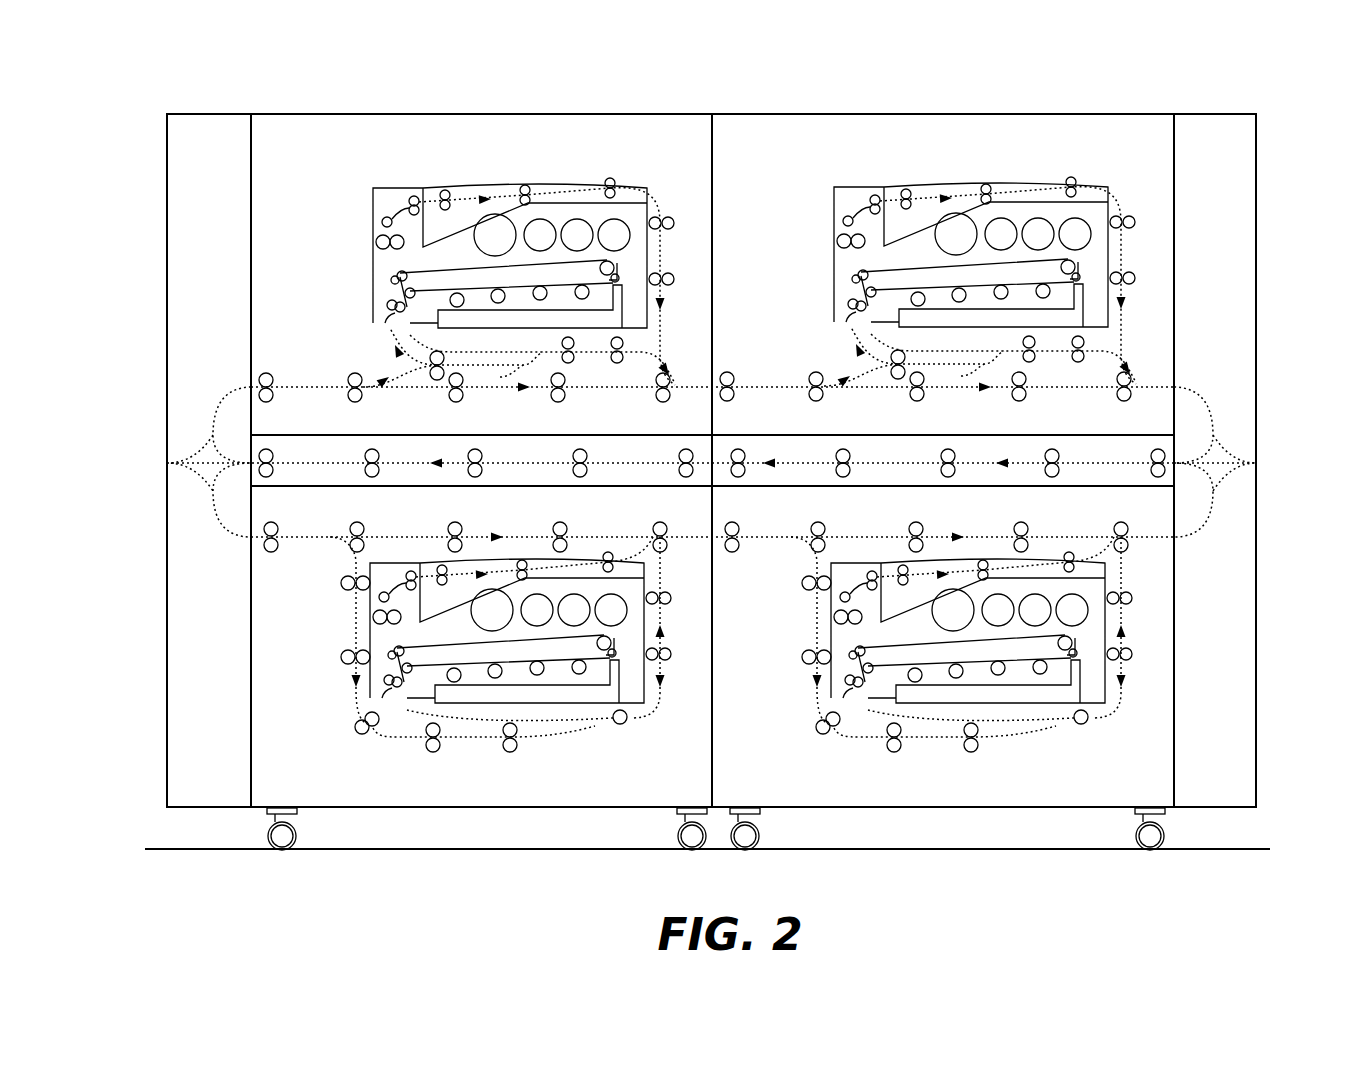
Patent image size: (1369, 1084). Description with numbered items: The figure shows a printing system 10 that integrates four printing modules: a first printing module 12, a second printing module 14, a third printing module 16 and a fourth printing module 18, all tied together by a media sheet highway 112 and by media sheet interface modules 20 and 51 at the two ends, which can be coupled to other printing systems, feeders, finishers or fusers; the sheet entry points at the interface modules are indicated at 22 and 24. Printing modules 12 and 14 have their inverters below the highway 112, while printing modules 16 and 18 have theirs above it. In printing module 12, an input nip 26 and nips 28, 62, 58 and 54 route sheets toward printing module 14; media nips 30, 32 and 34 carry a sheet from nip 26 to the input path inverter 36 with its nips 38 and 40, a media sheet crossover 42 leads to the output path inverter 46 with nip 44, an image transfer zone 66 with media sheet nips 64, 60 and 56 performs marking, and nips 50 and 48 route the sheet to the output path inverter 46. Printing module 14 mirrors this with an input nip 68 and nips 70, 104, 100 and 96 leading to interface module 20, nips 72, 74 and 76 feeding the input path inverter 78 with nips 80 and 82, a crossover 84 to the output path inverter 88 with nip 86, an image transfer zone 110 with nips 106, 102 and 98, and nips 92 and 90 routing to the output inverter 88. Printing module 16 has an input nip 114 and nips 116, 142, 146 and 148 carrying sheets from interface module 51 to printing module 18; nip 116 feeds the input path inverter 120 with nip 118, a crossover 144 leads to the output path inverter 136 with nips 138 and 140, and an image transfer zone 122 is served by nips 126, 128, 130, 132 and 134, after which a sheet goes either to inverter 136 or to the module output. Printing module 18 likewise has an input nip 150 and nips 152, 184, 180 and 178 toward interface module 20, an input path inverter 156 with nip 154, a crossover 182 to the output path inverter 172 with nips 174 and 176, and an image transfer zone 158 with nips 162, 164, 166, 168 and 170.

The printing system 10 is at (665, 460).
The first printing module 12 is at (462, 810).
The second printing module 14 is at (920, 810).
The third printing module 16 is at (480, 114).
The fourth printing module 18 is at (922, 114).
The media sheet interface module 20 is at (1258, 268).
The left sheet path inlet 22 is at (175, 462).
The right sheet path inlet 24 is at (1251, 462).
The input nip 26 is at (290, 523).
The nip 28 is at (377, 523).
The media nip 30 is at (333, 589).
The media nip 32 is at (333, 664).
The media nip 34 is at (349, 740).
The input path inverter 36 is at (462, 666).
The nip 38 is at (424, 759).
The nip 40 is at (499, 759).
The media sheet crossover 42 is at (510, 749).
The nip 44 is at (649, 734).
The output path inverter 46 is at (690, 642).
The media sheet nip 48 is at (697, 663).
The media sheet nip 50 is at (697, 606).
The media sheet interface module 51 is at (167, 265).
The nip 54 is at (677, 521).
The media sheet nip 56 is at (619, 540).
The nip 58 is at (579, 521).
The media sheet nip 60 is at (528, 544).
The nip 62 is at (474, 521).
The media sheet nip 64 is at (423, 540).
The image transfer zone 66 is at (481, 631).
The input nip 68 is at (752, 523).
The nip 70 is at (839, 523).
The media sheet nip 72 is at (795, 589).
The media sheet nip 74 is at (795, 664).
The media sheet nip 76 is at (811, 740).
The input path inverter 78 is at (923, 666).
The nip 80 is at (886, 759).
The nip 82 is at (963, 759).
The media sheet crossover 84 is at (971, 749).
The nip 86 is at (1111, 734).
The output path inverter 88 is at (1152, 642).
The media sheet nip 90 is at (1159, 663).
The media sheet nip 92 is at (1159, 606).
The nip 96 is at (1139, 521).
The media sheet nip 98 is at (1081, 540).
The nip 100 is at (1045, 521).
The media sheet nip 102 is at (990, 544).
The nip 104 is at (940, 521).
The media sheet nip 106 is at (882, 540).
The image transfer zone 110 is at (939, 631).
The media sheet highway 112 is at (348, 463).
The input nip 114 is at (285, 401).
The nip 116 is at (374, 401).
The nip 118 is at (429, 389).
The input path inverter 120 is at (489, 358).
The image transfer zone 122 is at (478, 256).
The media sheet nip 126 is at (430, 169).
The media sheet nip 128 is at (515, 166).
The media sheet nip 130 is at (602, 163).
The media sheet nip 132 is at (702, 216).
The media sheet nip 134 is at (702, 272).
The output path inverter 136 is at (565, 286).
The nip 138 is at (632, 376).
The nip 140 is at (590, 376).
The nip 142 is at (476, 400).
The media sheet crossover 144 is at (490, 371).
The nip 146 is at (536, 400).
The nip 148 is at (683, 400).
The input nip 150 is at (746, 400).
The nip 152 is at (835, 400).
The nip 154 is at (890, 388).
The input path inverter 156 is at (950, 357).
The image transfer zone 158 is at (939, 255).
The media sheet nip 162 is at (891, 168).
The media sheet nip 164 is at (976, 165).
The media sheet nip 166 is at (1063, 162).
The media sheet nip 168 is at (1163, 215).
The media sheet nip 170 is at (1163, 271).
The output path inverter 172 is at (1026, 285).
The nip 174 is at (1093, 375).
The nip 176 is at (1051, 375).
The nip 178 is at (1144, 399).
The nip 180 is at (997, 399).
The media sheet crossover 182 is at (951, 370).
The nip 184 is at (937, 399).